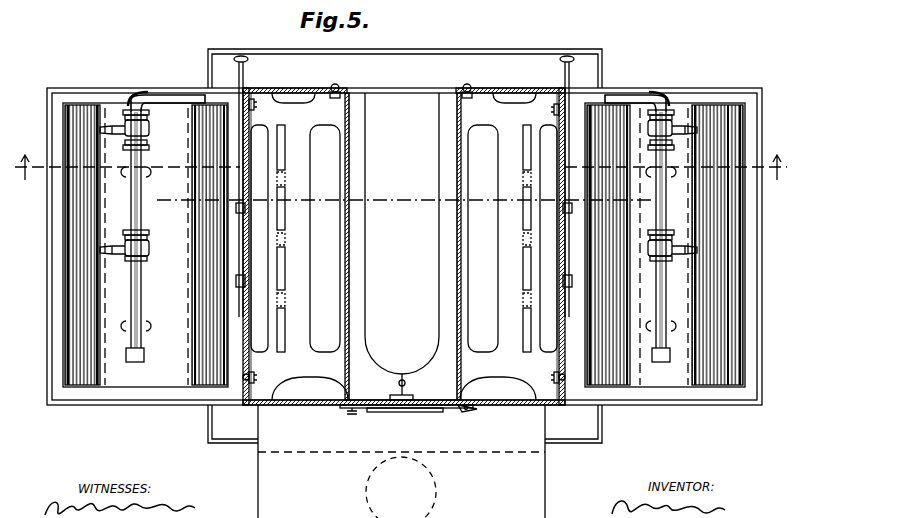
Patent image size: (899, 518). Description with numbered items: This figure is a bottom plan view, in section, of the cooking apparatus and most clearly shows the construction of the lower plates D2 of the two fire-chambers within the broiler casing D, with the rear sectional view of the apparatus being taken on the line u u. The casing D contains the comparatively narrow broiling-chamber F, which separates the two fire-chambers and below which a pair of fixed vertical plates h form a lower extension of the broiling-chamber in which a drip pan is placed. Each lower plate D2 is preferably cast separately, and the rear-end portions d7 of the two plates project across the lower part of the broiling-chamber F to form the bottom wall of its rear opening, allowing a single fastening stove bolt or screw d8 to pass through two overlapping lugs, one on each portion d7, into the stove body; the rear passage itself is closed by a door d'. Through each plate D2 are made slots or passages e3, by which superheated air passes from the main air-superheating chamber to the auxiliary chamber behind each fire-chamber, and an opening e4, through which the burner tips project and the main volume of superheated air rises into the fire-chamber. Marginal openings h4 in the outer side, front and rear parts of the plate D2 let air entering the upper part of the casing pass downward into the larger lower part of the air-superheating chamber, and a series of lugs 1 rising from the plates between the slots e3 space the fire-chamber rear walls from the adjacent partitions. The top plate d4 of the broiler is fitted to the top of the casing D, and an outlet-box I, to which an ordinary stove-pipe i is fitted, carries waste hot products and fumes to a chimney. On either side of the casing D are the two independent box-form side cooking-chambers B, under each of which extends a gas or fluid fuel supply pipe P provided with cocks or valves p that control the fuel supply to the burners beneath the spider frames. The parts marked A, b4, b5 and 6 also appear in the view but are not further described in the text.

The supporting plate A is at (512, 46).
The side cooking-chamber B is at (404, 245).
The casing D is at (300, 92).
The lower plate D2 is at (443, 286).
The broiling-chamber F is at (403, 246).
The outlet-box I is at (401, 461).
The stove-pipe i is at (401, 487).
The fluid fuel supply pipe P is at (186, 94).
The cock or valve p is at (127, 136).
The section line u is at (402, 167).
The guide blocks b4 is at (399, 245).
The rods b5 is at (238, 57).
The rear door d' is at (408, 423).
The top plate d4 is at (614, 427).
The rear-end portion d7 is at (403, 388).
The fastening stove bolt d8 is at (403, 378).
The slot or passage e3 is at (283, 192).
The opening e4 is at (404, 238).
The vertical plate h is at (403, 246).
The marginal opening h4 is at (290, 96).
The lug 1 is at (276, 179).
The bolts 6 is at (466, 85).